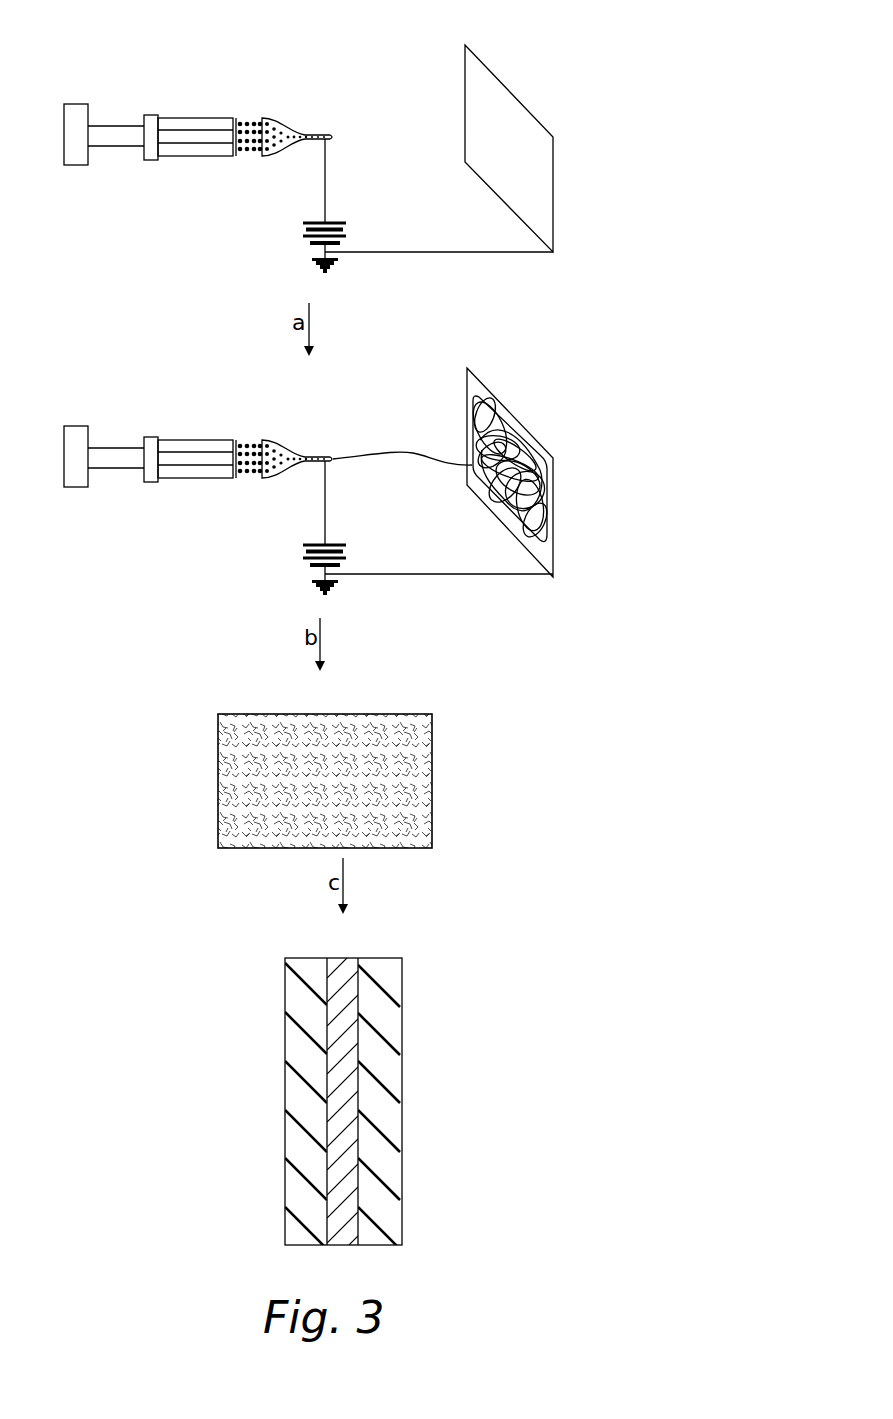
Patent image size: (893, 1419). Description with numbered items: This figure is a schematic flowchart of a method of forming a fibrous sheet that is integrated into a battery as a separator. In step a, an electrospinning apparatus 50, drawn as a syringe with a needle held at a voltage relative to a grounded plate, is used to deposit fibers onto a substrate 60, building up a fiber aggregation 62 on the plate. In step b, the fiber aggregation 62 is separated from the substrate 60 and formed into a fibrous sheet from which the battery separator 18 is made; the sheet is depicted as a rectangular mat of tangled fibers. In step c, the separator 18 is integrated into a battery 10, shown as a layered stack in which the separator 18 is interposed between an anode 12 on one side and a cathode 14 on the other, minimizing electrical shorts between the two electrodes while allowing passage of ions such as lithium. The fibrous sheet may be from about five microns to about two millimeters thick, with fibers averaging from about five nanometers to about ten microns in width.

The electrospinning apparatus 50 is at (144, 56).
The substrate 60 is at (473, 90).
The fiber aggregation 62 is at (493, 420).
The separator 18 is at (425, 747).
The battery 10 is at (305, 943).
The anode 12 is at (288, 1043).
The cathode 14 is at (397, 1036).